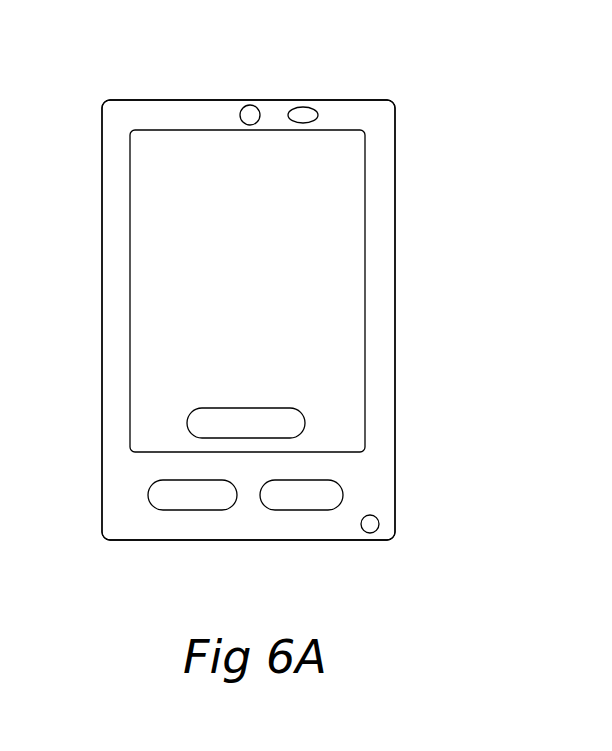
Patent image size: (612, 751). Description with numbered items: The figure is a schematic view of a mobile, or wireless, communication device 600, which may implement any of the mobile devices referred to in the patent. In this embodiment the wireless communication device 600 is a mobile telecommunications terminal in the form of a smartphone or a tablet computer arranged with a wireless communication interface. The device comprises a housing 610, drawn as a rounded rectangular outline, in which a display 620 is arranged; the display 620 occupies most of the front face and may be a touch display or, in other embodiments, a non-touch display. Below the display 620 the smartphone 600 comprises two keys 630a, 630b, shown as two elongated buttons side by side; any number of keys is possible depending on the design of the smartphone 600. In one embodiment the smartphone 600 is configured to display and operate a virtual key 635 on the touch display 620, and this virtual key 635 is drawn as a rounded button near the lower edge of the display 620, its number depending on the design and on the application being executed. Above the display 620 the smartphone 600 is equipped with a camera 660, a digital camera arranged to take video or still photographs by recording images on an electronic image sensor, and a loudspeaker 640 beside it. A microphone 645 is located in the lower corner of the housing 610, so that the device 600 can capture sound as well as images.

The mobile communication device 600 is at (126, 100).
The housing 610 is at (395, 218).
The display 620 is at (350, 297).
The virtual key 635 is at (305, 423).
The key 630a is at (177, 510).
The key 630b is at (343, 497).
The loudspeaker 640 is at (303, 107).
The microphone 645 is at (379, 524).
The camera 660 is at (250, 105).